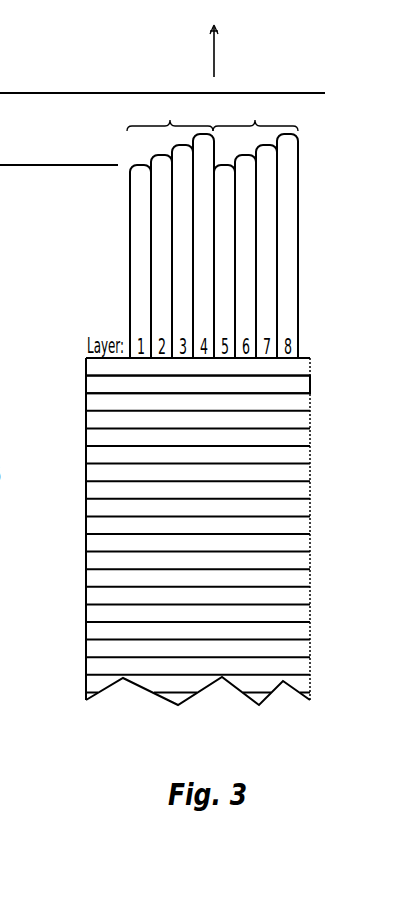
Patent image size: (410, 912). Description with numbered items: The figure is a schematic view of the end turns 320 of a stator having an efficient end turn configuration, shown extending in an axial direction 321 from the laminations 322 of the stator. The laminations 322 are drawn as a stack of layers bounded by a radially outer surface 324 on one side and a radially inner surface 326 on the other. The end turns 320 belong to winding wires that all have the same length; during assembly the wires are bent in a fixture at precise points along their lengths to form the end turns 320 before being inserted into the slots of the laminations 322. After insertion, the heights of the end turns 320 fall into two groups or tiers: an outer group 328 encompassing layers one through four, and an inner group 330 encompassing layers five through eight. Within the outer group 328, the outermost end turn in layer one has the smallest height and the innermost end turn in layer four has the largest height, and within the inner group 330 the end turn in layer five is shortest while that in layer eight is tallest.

The end turns 320 is at (140, 80).
The axial direction 321 is at (214, 57).
The laminations 322 is at (297, 384).
The radially outer surface 324 is at (86, 550).
The radially inner surface 326 is at (310, 537).
The outer group 328 is at (170, 228).
The inner group 330 is at (255, 228).